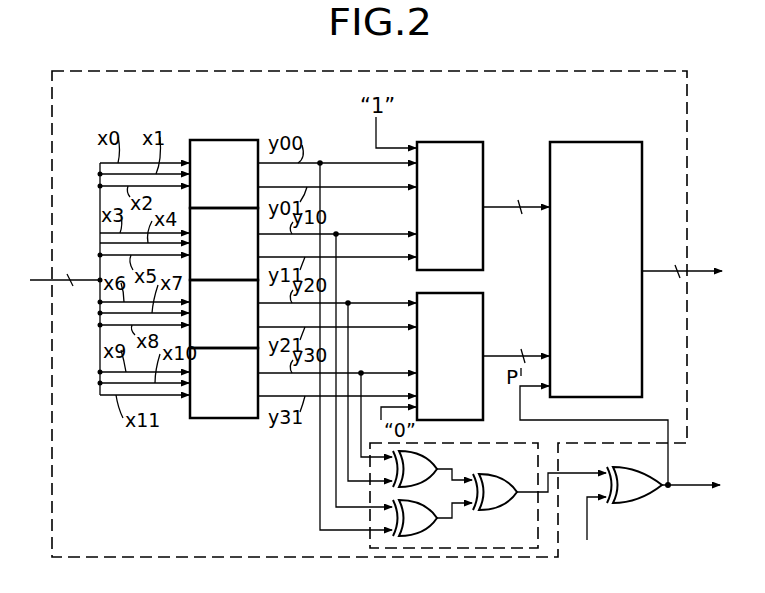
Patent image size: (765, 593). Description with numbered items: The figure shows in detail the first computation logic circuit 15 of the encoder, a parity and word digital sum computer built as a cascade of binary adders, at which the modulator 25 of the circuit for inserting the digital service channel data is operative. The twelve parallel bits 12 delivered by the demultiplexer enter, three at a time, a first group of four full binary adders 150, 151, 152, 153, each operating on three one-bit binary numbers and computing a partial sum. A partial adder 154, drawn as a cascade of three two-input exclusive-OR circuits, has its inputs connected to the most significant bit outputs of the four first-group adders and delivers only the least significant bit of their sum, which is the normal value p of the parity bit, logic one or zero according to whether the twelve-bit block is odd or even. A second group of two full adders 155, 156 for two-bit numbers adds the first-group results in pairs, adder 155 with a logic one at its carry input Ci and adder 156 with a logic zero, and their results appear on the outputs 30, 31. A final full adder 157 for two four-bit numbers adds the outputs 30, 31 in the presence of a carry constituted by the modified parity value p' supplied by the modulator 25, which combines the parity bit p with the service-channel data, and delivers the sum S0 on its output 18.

The first computation logic circuit 15 is at (128, 90).
The parallel bits 12 is at (65, 271).
The full binary adder 150 is at (218, 150).
The full binary adder 151 is at (221, 250).
The full binary adder 152 is at (224, 314).
The full binary adder 153 is at (236, 420).
The partial adder 154 is at (370, 546).
The full adder 155 is at (450, 150).
The full adder 156 is at (474, 303).
The final full adder 157 is at (585, 152).
The output of adder 155 30 is at (495, 205).
The output of adder 156 31 is at (512, 356).
The sum output S0 18 is at (698, 267).
The modulator 25 is at (640, 492).